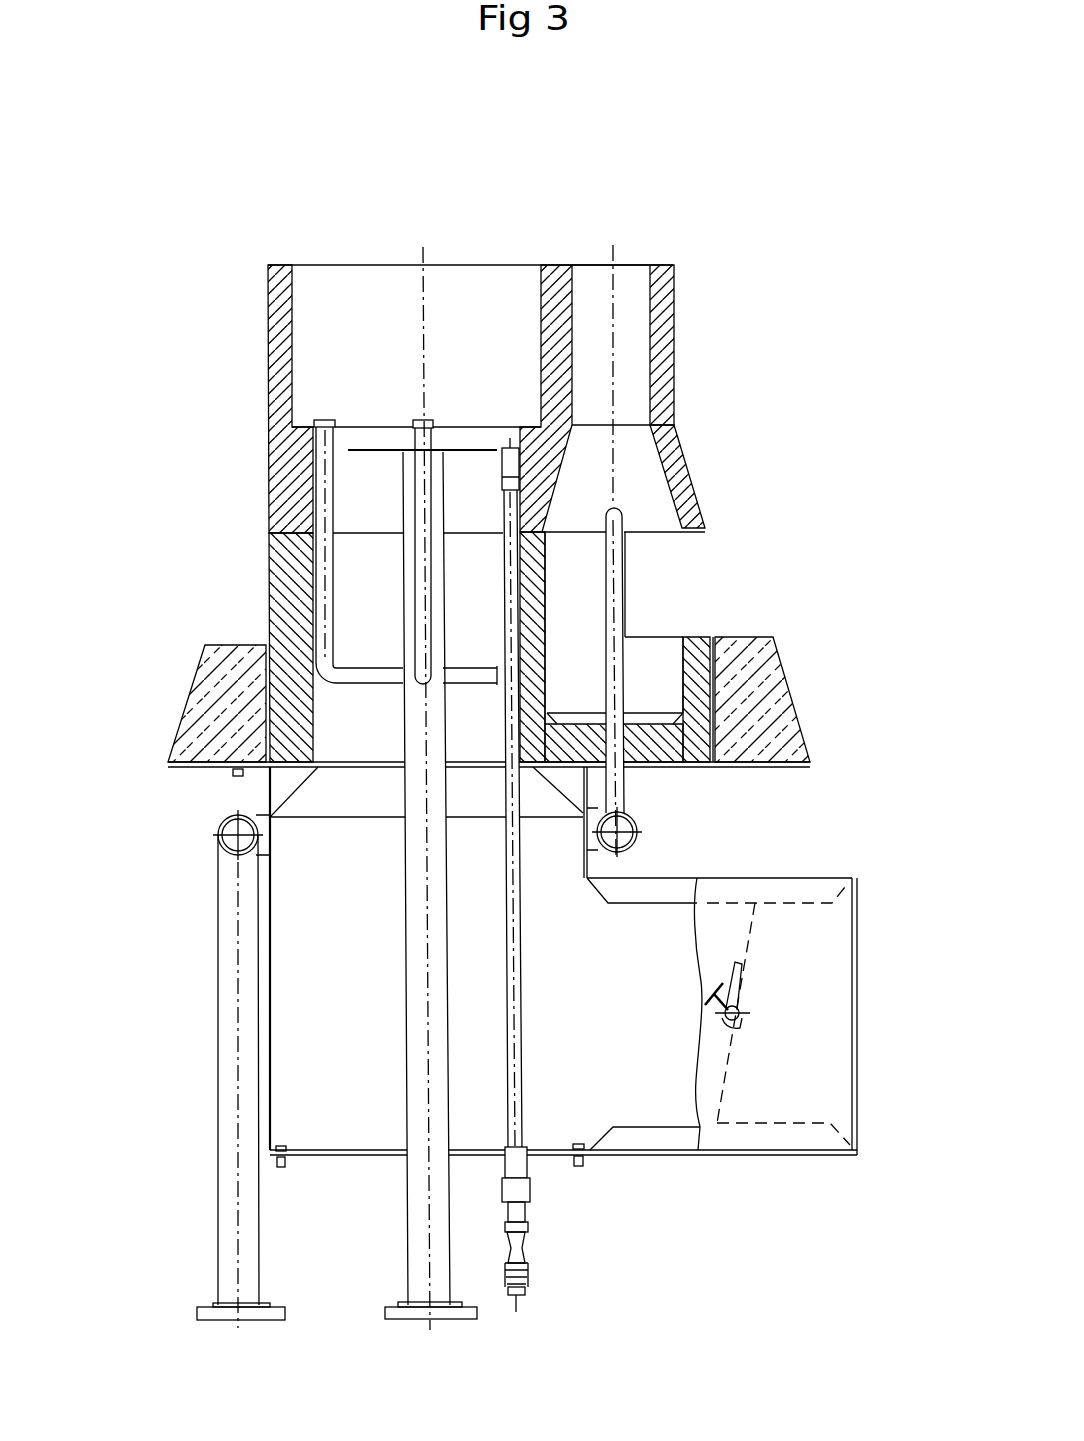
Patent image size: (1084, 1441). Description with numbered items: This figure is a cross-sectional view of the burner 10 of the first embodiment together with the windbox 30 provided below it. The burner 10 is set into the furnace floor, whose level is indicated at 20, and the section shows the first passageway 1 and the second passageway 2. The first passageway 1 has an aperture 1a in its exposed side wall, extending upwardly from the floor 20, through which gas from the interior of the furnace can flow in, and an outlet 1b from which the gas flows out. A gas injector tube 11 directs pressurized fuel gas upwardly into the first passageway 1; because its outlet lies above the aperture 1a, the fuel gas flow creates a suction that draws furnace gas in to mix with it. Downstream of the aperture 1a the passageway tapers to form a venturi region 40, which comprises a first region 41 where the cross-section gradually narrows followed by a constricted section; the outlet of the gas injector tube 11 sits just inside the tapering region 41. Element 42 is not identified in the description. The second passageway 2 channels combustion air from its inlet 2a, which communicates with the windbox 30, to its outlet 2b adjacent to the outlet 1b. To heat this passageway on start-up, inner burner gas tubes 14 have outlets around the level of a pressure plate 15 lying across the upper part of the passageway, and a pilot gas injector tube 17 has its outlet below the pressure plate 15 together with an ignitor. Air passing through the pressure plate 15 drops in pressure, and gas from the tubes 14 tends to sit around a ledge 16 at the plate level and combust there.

The burner 10 is at (257, 244).
The first passageway 1 is at (675, 263).
The aperture 1a is at (657, 537).
The outlet 1b is at (593, 263).
The second passageway 2 is at (268, 342).
The inlet 2a is at (370, 766).
The outlet 2b is at (385, 263).
The gas injector tube 11 is at (612, 572).
The inner burner gas tubes 14 is at (420, 417).
The pressure plate 15 is at (468, 447).
The ledge 16 is at (304, 425).
The pilot gas injector tube 17 is at (527, 1245).
The furnace floor 20 is at (203, 645).
The windbox 30 is at (758, 878).
The venturi region 40 is at (632, 415).
The first region 41 is at (693, 473).
The tube wall 42 is at (677, 340).